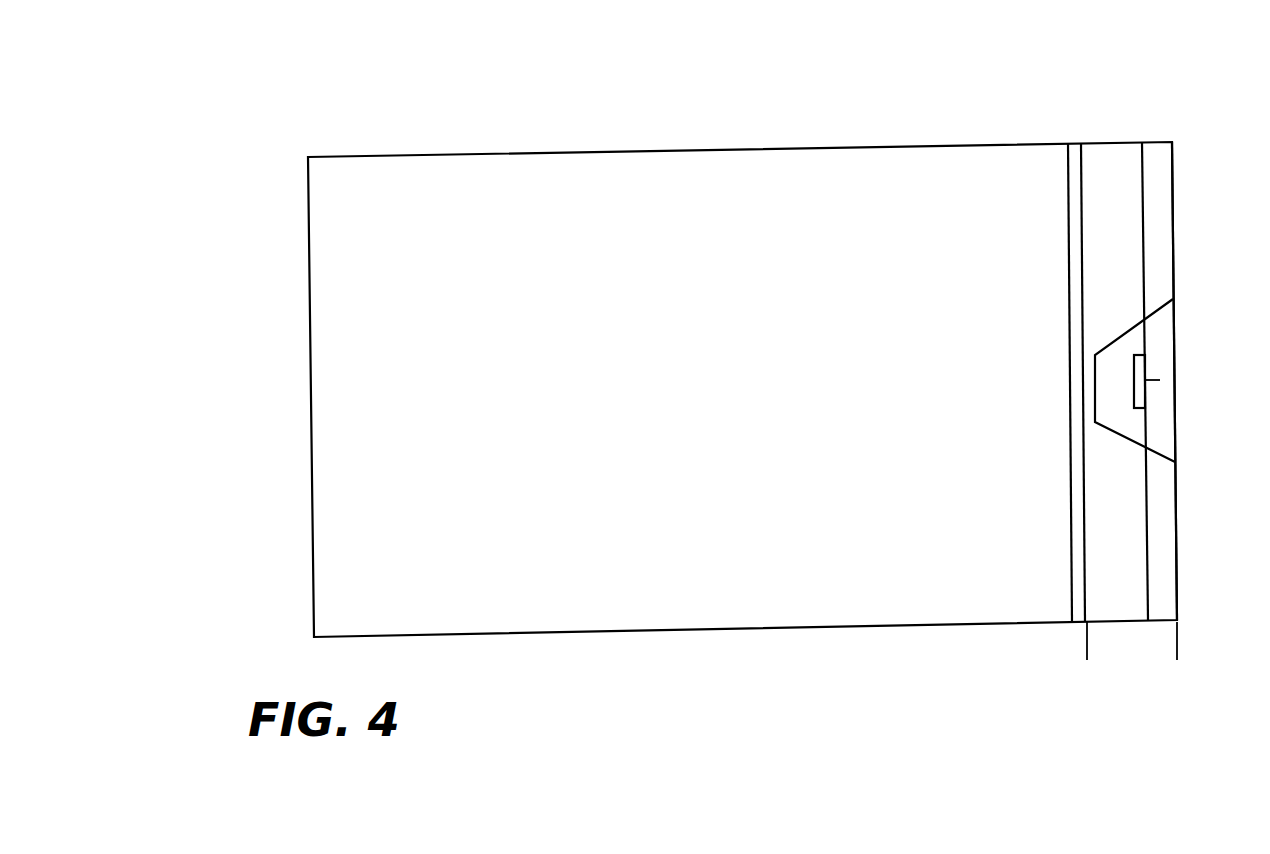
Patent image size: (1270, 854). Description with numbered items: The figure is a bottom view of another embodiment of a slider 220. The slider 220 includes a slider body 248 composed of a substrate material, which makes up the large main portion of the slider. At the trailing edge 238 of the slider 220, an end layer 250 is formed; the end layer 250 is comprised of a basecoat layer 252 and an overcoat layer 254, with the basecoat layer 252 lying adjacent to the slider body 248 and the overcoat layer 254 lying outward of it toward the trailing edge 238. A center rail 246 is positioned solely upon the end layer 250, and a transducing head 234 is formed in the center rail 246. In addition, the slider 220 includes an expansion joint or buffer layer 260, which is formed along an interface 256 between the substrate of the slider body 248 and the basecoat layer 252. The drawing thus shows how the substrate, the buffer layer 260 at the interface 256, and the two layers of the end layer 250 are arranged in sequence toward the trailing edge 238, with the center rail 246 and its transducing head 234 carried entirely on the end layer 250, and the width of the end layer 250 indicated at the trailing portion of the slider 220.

The slider 220 is at (400, 110).
The slider body 248 is at (682, 257).
The interface 256 is at (1068, 243).
The expansion joint or buffer layer 260 is at (1080, 610).
The basecoat layer 252 is at (1117, 243).
The overcoat layer 254 is at (1155, 195).
The center rail 246 is at (1103, 360).
The transducing head 234 is at (1148, 362).
The trailing edge 238 is at (1177, 523).
The end layer 250 is at (1175, 635).